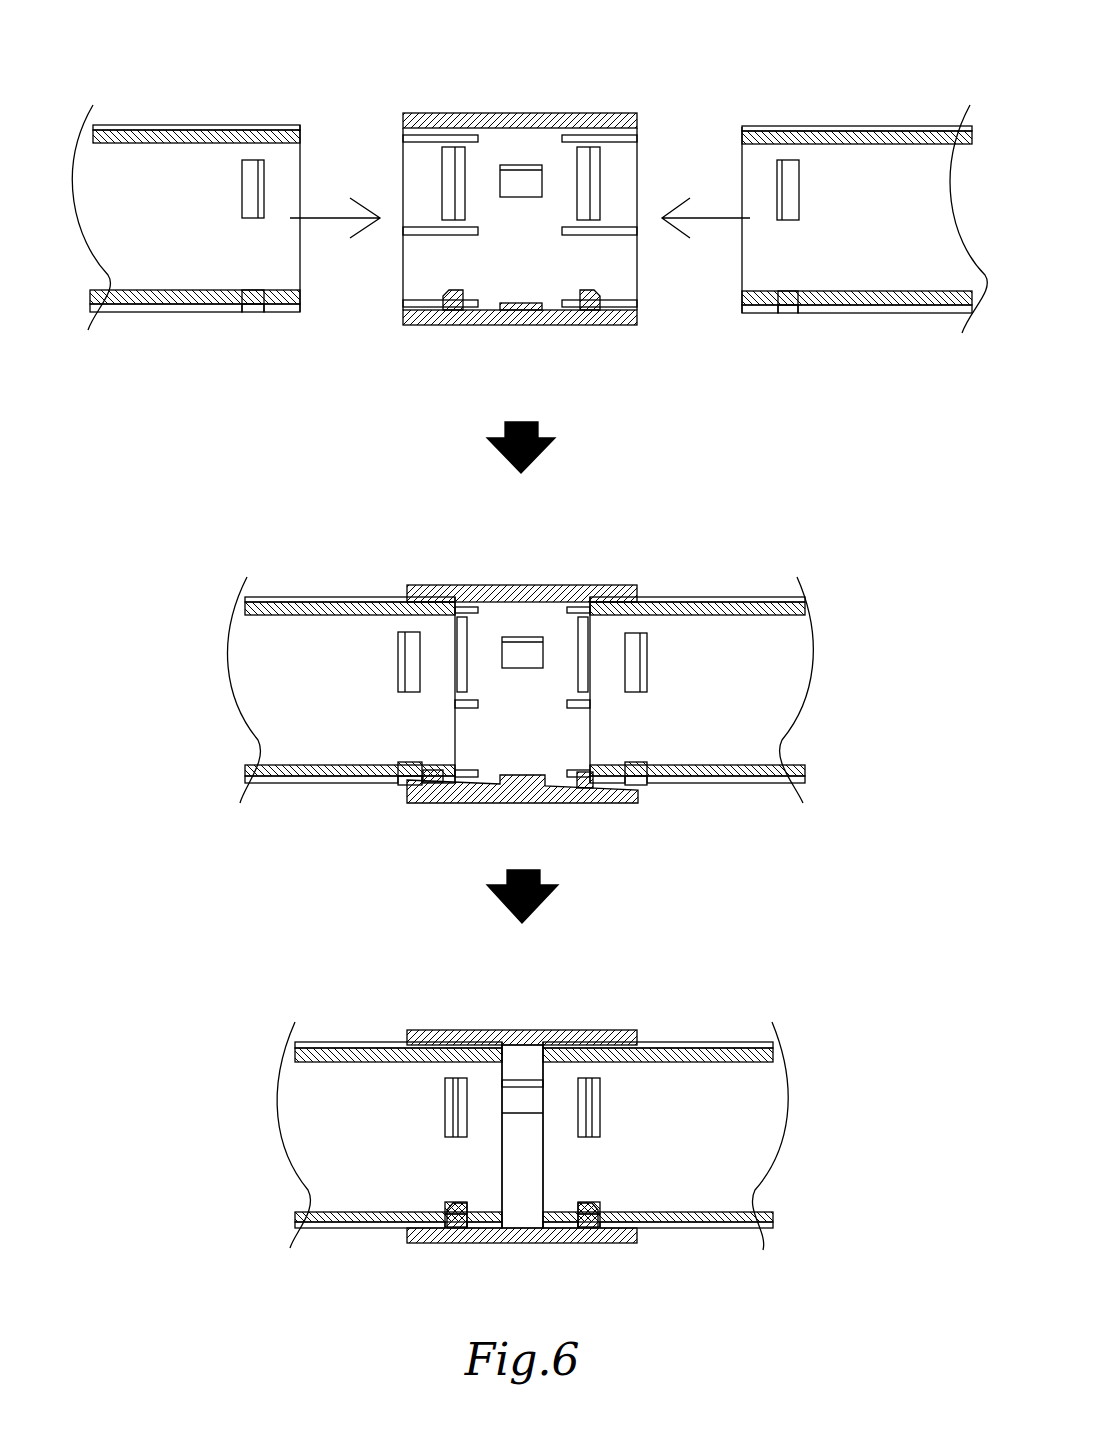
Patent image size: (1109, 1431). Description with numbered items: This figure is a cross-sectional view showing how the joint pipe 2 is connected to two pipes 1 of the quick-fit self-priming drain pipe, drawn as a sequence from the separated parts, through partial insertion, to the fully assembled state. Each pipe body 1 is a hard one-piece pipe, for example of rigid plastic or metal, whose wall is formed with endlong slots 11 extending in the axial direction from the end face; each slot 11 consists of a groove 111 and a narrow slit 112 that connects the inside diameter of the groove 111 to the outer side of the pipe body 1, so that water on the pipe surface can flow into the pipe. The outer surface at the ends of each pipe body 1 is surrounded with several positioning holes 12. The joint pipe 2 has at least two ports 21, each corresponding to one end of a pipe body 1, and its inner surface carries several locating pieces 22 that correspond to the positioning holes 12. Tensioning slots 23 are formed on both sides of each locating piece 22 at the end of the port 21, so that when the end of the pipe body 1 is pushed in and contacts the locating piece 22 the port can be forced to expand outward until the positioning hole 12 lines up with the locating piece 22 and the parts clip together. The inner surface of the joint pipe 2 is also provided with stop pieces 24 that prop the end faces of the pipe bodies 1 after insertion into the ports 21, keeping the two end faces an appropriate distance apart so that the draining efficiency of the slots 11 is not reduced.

The pipe body 1 is at (529, 669).
The joint pipe 2 is at (525, 658).
The slot 11 is at (531, 725).
The positioning hole 12 is at (262, 164).
The port 21 is at (403, 128).
The locating piece 22 is at (442, 185).
The tensioning slot 23 is at (403, 138).
The stop piece 24 is at (520, 197).
The groove 111 is at (247, 365).
The narrow slit 112 is at (218, 318).